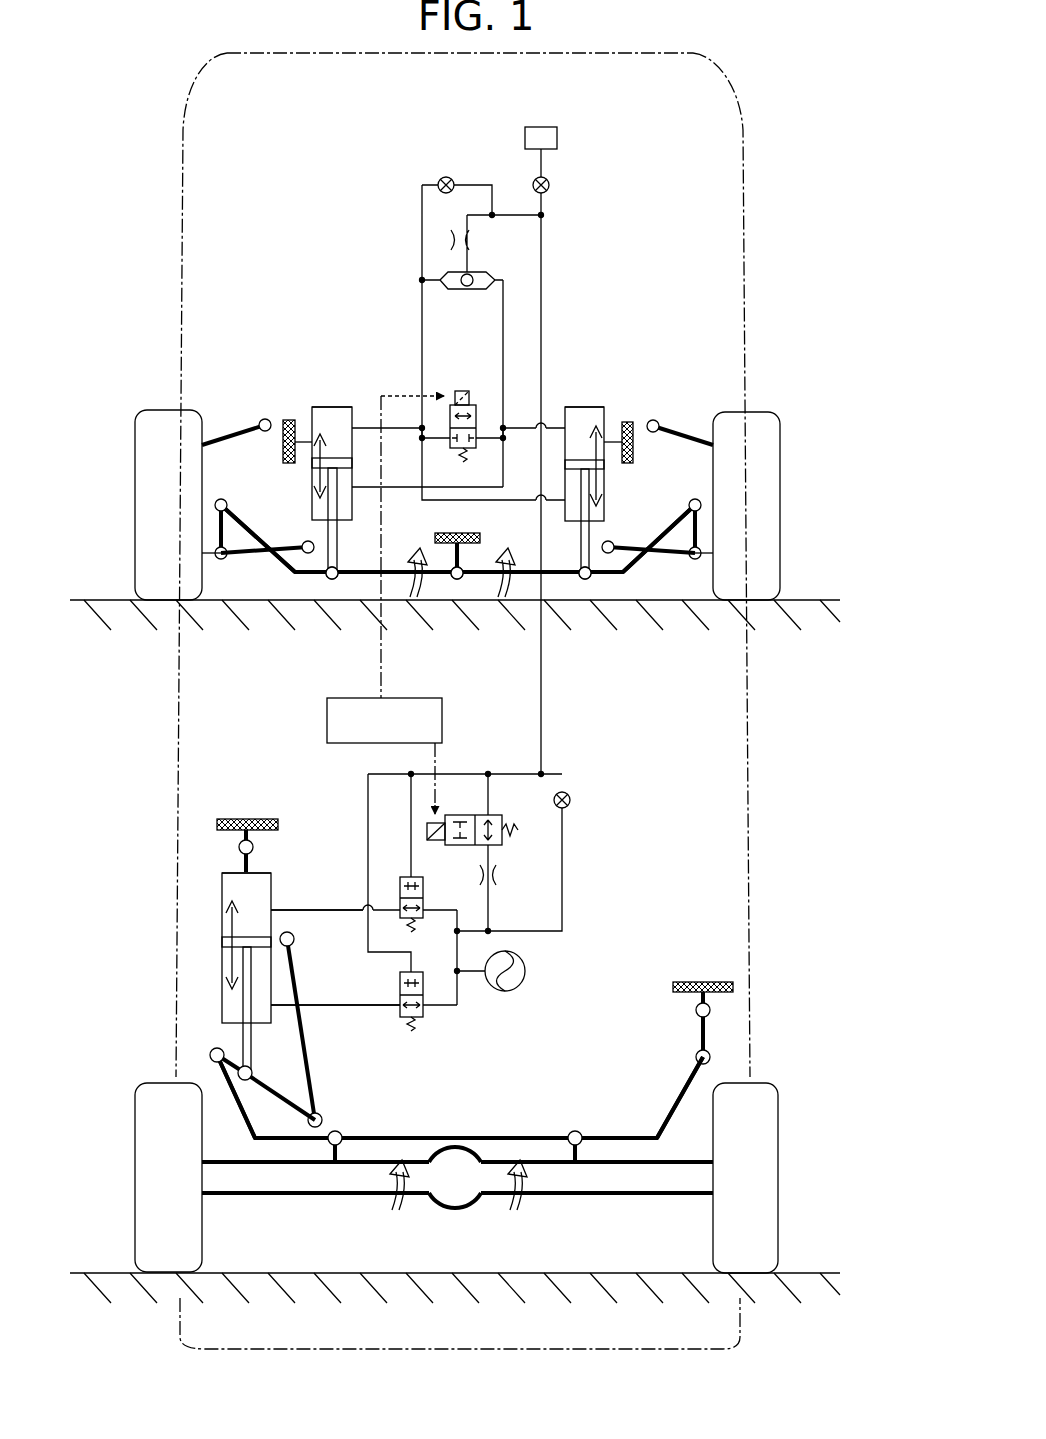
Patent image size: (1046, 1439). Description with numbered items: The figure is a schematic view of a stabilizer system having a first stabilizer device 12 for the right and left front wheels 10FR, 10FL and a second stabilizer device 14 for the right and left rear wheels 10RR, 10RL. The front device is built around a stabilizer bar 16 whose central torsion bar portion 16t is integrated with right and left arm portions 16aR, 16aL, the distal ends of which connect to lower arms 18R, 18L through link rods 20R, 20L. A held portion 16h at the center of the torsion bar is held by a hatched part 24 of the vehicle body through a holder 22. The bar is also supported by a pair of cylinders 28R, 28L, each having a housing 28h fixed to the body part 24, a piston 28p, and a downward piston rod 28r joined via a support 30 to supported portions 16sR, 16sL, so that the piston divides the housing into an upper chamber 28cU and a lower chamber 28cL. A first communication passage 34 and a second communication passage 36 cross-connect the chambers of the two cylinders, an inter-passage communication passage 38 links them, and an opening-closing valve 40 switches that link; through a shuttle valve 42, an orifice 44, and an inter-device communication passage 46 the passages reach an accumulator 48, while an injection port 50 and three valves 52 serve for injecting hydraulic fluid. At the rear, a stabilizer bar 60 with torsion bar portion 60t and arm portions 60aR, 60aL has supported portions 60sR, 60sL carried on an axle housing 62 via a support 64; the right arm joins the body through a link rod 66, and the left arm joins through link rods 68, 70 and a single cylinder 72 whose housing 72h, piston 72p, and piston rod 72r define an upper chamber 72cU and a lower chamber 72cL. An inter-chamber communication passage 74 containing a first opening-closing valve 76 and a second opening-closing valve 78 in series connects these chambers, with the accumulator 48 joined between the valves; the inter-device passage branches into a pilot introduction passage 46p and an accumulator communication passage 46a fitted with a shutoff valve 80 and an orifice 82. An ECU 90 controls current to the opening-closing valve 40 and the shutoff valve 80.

The left front wheel 10FL is at (150, 420).
The right front wheel 10FR is at (768, 420).
The left rear wheel 10RL is at (150, 1085).
The right rear wheel 10RR is at (770, 1088).
The first stabilizer device 12 is at (622, 277).
The second stabilizer device 14 is at (601, 919).
The stabilizer bar 16 is at (512, 590).
The left arm portion 16aL is at (277, 562).
The right arm portion 16aR is at (652, 576).
The held portion 16h is at (465, 590).
The left supported portion 16sL is at (336, 584).
The right supported portion 16sR is at (588, 585).
The torsion bar portion 16t is at (408, 600).
The left lower arm 18L is at (232, 560).
The right lower arm 18R is at (685, 562).
The left link rod 20L is at (217, 530).
The right link rod 20R is at (700, 528).
The holder 22 is at (456, 584).
The part of the vehicle body 24 is at (283, 446).
The left cylinder 28L is at (307, 393).
The right cylinder 28R is at (606, 392).
The lower chamber 28cL is at (312, 503).
The upper chamber 28cU is at (312, 418).
The housing 28h is at (334, 406).
The piston 28p is at (343, 457).
The piston rod 28r is at (336, 534).
The support 30 is at (338, 588).
The first communication passage 34 is at (420, 472).
The second communication passage 36 is at (505, 472).
The inter-passage communication passage 38 is at (506, 420).
The opening-closing valve 40 is at (455, 290).
The shuttle valve 42 is at (480, 400).
The orifice 44 is at (474, 242).
The inter-device communication passage 46 is at (541, 738).
The accumulator communication passage 46a is at (493, 800).
The pilot introduction passage 46p is at (457, 773).
The accumulator 48 is at (522, 980).
The injection port 50 is at (555, 130).
The valve 52 is at (442, 177).
The stabilizer bar 60 is at (540, 1152).
The left arm portion 60aL is at (240, 1115).
The right arm portion 60aR is at (690, 1118).
The left supported portion 60sL is at (318, 1146).
The right supported portion 60sR is at (585, 1130).
The torsion bar portion 60t is at (490, 1138).
The axle housing 62 is at (378, 1197).
The support 64 is at (335, 1150).
The link rod 66 is at (706, 1035).
The link rod 68 is at (285, 1096).
The link rod 70 is at (305, 1037).
The cylinder 72 is at (200, 882).
The lower chamber 72cL is at (271, 986).
The upper chamber 72cU is at (262, 892).
The housing 72h is at (222, 903).
The piston 72p is at (222, 941).
The piston rod 72r is at (243, 1005).
The inter-chamber communication passage 74 is at (388, 1012).
The first opening-closing valve 76 is at (400, 886).
The second opening-closing valve 78 is at (426, 1015).
The shutoff valve 80 is at (505, 843).
The orifice 82 is at (500, 877).
The ECU 90 is at (328, 727).